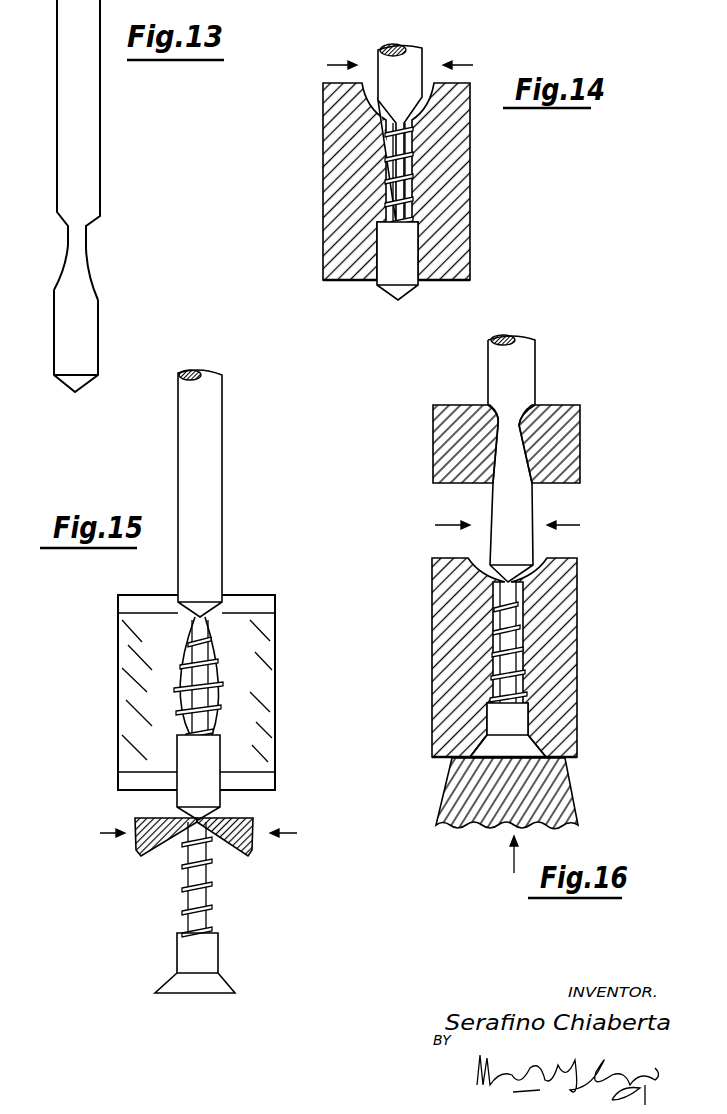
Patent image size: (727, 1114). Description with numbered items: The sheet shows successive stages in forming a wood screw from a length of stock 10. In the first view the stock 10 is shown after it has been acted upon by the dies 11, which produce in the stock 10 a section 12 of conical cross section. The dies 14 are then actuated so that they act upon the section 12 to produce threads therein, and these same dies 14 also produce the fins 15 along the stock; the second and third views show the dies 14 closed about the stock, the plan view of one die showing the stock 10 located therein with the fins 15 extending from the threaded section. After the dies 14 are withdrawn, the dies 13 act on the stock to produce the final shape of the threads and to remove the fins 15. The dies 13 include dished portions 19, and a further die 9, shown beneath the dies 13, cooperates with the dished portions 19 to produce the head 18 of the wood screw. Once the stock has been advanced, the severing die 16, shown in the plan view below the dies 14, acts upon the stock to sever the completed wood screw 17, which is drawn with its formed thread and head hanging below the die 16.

In FIG. 16, the die 9 is at (470, 780).
In FIG. 13, the length of stock 10 is at (80, 174).
In FIG. 15, the length of stock 10 is at (205, 412).
In FIG. 16, the length of stock 10 is at (535, 360).
In FIG. 16, the dies 11 is at (445, 437).
In FIG. 13, the section 12 is at (77, 245).
In FIG. 16, the section 12 is at (507, 430).
In FIG. 16, the dies 13 is at (452, 605).
In FIG. 14, the dies 14 is at (342, 190).
In FIG. 15, the dies 14 is at (253, 640).
In FIG. 15, the fins 15 is at (185, 700).
In FIG. 15, the die 16 is at (135, 820).
In FIG. 15, the wood screw 17 is at (208, 895).
In FIG. 16, the head 18 is at (518, 748).
In FIG. 16, the dished portions 19 is at (472, 747).